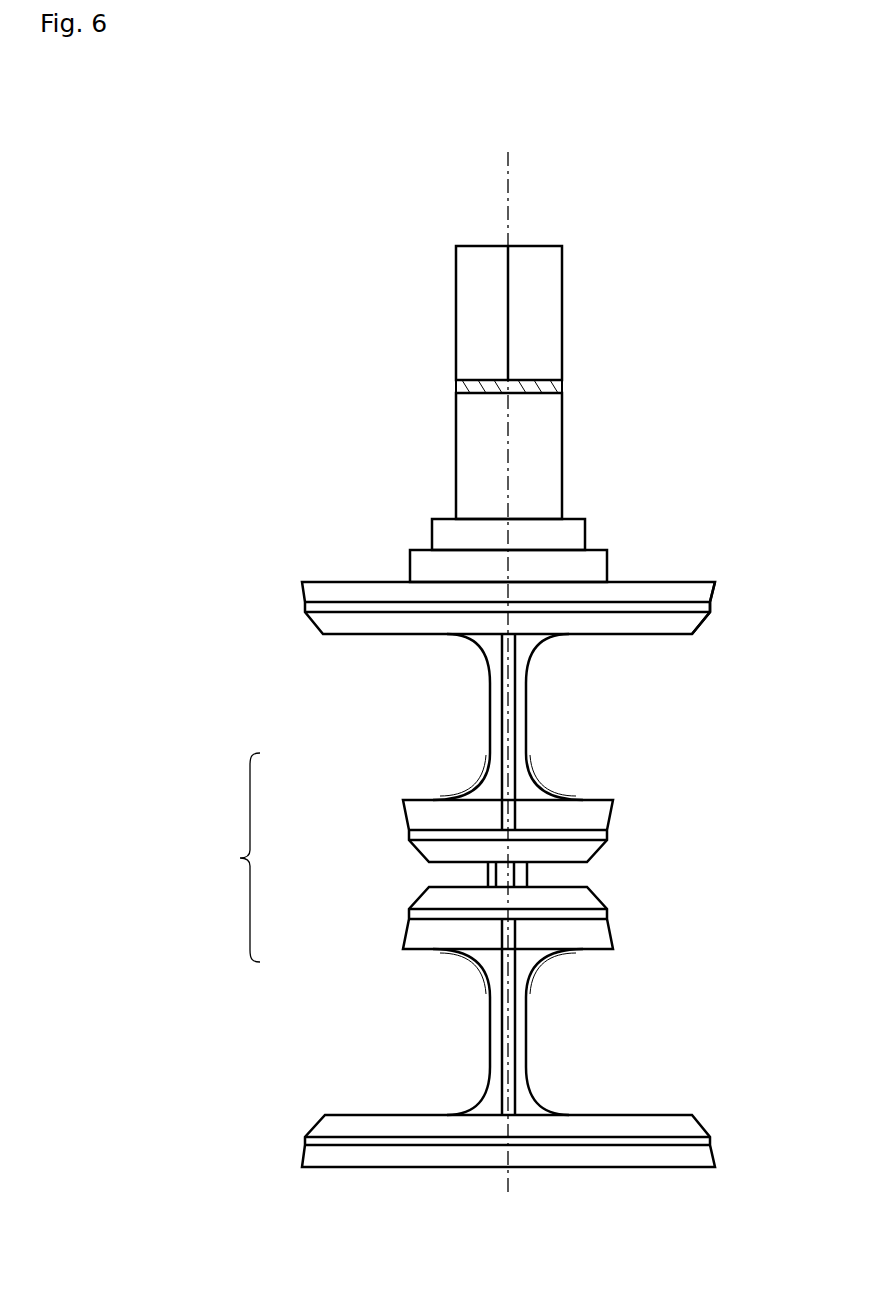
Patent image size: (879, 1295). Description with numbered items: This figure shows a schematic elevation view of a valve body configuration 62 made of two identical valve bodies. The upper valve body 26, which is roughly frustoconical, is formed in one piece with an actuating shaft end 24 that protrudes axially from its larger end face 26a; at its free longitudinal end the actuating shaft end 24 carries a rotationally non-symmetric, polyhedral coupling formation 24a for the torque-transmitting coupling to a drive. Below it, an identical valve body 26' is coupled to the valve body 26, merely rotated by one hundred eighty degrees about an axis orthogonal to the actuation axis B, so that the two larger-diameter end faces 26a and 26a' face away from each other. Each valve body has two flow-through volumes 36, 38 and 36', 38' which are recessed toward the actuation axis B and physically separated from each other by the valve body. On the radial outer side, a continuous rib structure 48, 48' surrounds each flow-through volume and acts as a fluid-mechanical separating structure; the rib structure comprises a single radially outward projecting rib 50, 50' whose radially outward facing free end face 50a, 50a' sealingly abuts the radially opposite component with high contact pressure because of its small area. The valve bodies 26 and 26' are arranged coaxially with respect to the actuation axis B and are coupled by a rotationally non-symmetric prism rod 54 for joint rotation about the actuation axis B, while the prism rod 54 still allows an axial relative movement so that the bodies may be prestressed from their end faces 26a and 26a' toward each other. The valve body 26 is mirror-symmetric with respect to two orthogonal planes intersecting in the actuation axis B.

The actuation axis B is at (510, 165).
The actuating shaft end 24 is at (462, 423).
The coupling formation 24a is at (480, 300).
The valve body 26 is at (485, 748).
The valve body 26' is at (532, 1022).
The end face 26a is at (490, 564).
The end face 26a' is at (507, 1183).
The flow-through volume 36 is at (366, 717).
The flow-through volume 36' is at (369, 1032).
The flow-through volume 38 is at (626, 717).
The flow-through volume 38' is at (637, 1032).
The rib structure 48 is at (746, 595).
The rib structure 48' is at (750, 977).
The rib 50 is at (472, 586).
The rib 50' is at (472, 1118).
The free end face 50a is at (552, 831).
The free end face 50a' is at (610, 1022).
The prism rod 54 is at (488, 878).
The valve body configuration 62 is at (234, 857).